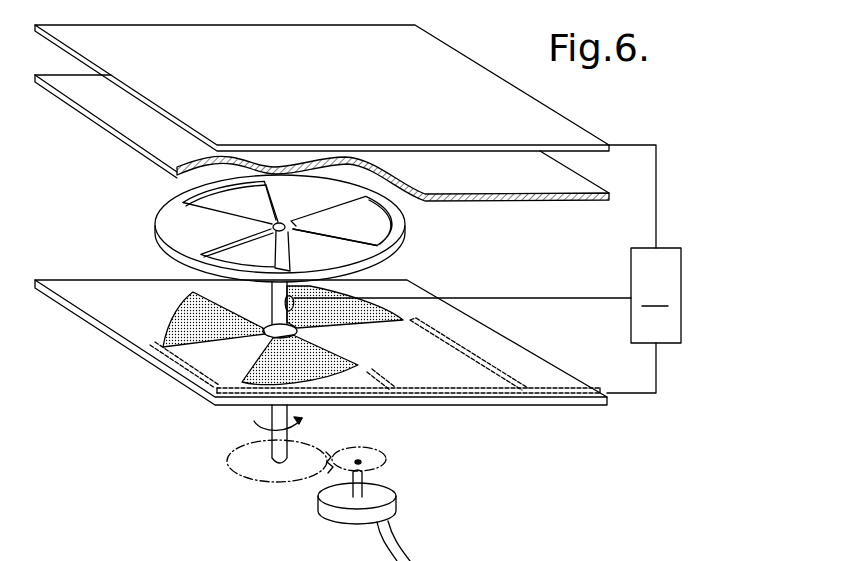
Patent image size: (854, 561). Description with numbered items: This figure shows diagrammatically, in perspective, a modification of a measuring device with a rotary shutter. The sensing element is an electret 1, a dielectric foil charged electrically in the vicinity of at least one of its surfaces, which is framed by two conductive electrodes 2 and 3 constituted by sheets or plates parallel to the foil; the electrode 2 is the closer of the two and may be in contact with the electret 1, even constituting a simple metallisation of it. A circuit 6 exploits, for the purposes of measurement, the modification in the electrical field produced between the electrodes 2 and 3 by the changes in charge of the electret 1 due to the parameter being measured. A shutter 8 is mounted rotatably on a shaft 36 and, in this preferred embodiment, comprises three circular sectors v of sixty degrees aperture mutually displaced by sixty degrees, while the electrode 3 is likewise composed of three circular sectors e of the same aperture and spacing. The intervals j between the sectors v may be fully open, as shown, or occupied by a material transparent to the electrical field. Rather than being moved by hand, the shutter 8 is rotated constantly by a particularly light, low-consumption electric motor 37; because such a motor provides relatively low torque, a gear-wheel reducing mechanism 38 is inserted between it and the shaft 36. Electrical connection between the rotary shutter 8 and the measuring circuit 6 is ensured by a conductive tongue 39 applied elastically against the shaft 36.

The electret 1 is at (514, 197).
The conductive electrode 2 is at (474, 145).
The conductive electrode 3 is at (188, 343).
The circuit 6 is at (487, 269).
The shutter 8 is at (289, 197).
The shaft 36 is at (278, 303).
The electric motor 37 is at (377, 502).
The gear-wheel reducing mechanism 38 is at (338, 470).
The conductive tongue 39 is at (292, 306).
The intervals j is at (210, 202).
The circular sectors v is at (178, 230).
The circular sectors e is at (208, 337).